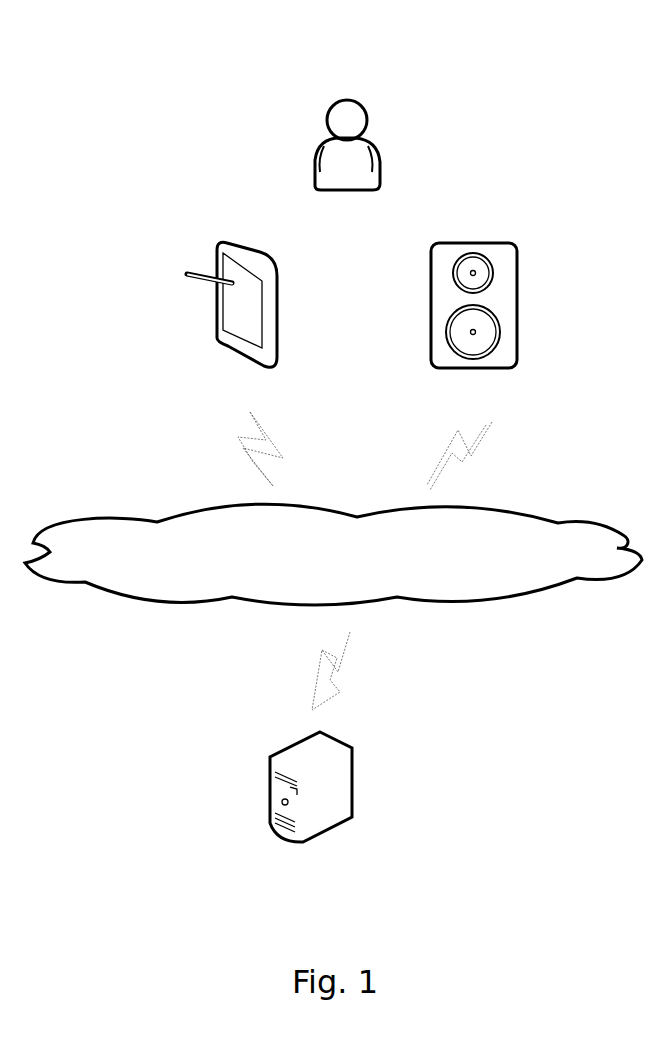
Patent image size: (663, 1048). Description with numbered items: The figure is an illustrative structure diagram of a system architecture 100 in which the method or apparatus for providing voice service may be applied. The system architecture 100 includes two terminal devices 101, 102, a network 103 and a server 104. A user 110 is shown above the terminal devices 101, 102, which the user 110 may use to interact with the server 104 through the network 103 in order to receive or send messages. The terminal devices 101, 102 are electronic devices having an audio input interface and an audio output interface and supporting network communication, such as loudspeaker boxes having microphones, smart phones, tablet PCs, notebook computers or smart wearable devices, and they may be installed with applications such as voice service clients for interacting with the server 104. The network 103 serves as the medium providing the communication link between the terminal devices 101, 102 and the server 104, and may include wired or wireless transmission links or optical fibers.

The system architecture 100 is at (582, 43).
The user 110 is at (347, 167).
The terminal device 101 is at (232, 324).
The terminal device 102 is at (474, 325).
The network 103 is at (333, 554).
The server 104 is at (311, 814).